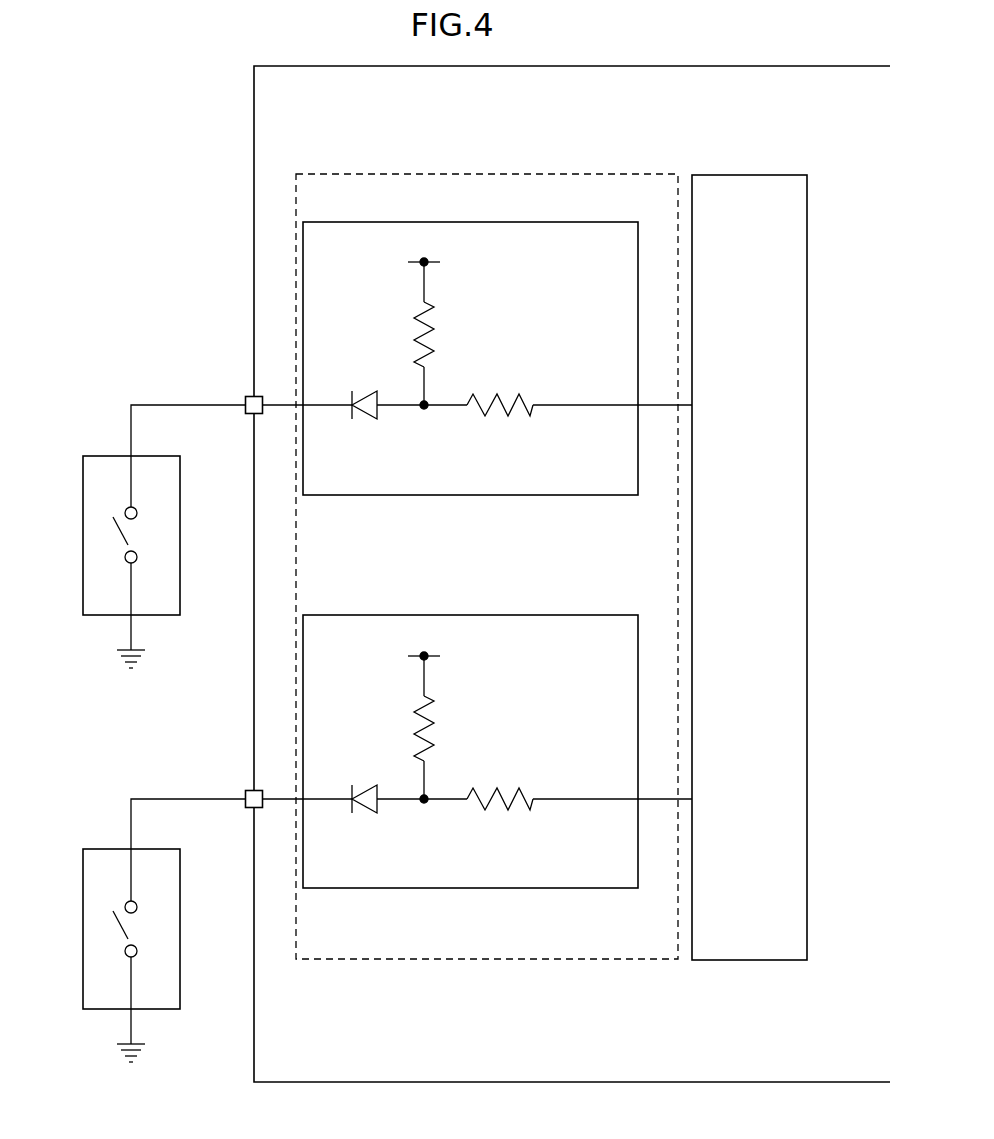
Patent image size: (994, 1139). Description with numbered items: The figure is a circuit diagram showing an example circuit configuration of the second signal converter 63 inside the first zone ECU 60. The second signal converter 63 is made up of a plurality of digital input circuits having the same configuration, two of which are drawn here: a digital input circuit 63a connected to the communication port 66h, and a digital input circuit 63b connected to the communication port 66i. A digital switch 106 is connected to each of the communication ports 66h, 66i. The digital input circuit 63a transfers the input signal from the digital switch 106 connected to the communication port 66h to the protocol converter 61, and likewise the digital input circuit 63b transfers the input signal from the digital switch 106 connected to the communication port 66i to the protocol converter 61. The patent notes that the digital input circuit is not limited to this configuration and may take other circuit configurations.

The first zone ECU 60 is at (620, 64).
The protocol converter 61 is at (745, 172).
The second signal converter 63 is at (541, 174).
The digital input circuit 63a is at (566, 222).
The digital input circuit 63b is at (550, 615).
The communication port 66h is at (250, 395).
The communication port 66i is at (247, 790).
The digital switch 106 is at (106, 456).